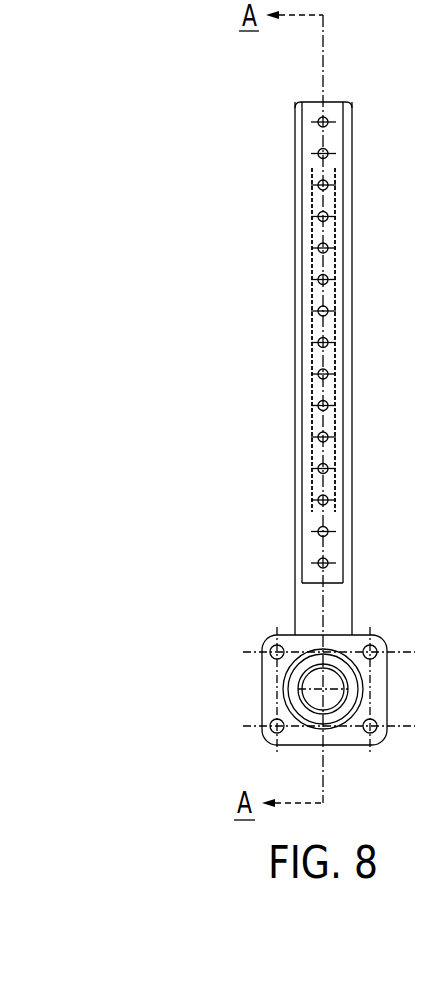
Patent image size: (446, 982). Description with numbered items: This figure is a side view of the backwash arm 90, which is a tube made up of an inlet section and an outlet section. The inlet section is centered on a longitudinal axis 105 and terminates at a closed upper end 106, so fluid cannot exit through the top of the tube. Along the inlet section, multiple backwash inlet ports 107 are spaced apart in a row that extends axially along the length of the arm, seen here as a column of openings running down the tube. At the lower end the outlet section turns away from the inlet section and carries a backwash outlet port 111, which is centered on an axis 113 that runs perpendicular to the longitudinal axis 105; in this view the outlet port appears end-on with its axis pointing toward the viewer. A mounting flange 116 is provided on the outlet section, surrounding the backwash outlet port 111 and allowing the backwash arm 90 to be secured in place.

The backwash arm 90 is at (188, 112).
The longitudinal axis 105 is at (296, 409).
The closed upper end 106 is at (310, 101).
The backwash inlet ports 107 is at (333, 183).
The backwash outlet port 111 is at (308, 692).
The axis 113 is at (306, 692).
The mounting flange 116 is at (268, 641).